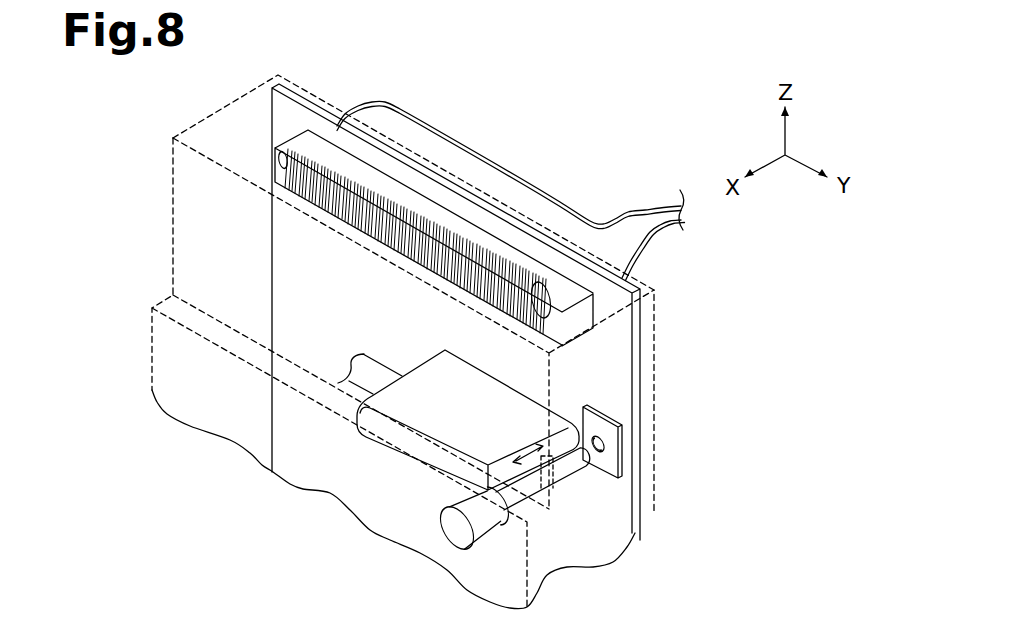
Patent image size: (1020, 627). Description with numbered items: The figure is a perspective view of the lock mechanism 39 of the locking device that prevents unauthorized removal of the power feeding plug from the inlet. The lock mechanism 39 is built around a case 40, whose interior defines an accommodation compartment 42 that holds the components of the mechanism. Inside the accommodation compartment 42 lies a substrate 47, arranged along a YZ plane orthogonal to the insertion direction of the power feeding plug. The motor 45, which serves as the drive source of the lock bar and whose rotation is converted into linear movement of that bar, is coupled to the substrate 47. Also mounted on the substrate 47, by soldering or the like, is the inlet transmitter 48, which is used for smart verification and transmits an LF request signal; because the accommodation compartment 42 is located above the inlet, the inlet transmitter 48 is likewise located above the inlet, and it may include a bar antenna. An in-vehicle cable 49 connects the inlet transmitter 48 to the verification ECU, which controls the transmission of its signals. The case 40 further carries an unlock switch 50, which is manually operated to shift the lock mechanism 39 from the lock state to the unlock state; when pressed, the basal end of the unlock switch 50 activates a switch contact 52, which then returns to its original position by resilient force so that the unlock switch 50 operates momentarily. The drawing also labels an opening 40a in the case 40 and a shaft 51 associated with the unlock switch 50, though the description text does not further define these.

The lock mechanism 39 is at (120, 110).
The case 40 is at (208, 118).
The opening in support panel 40a is at (553, 515).
The accommodation compartment 42 is at (172, 256).
The motor 45 is at (405, 456).
The substrate 47 is at (588, 273).
The inlet transmitter 48 is at (378, 178).
The in-vehicle cable 49 is at (681, 231).
The unlock switch 50 is at (447, 519).
The shaft 51 is at (487, 540).
The switch contact 52 is at (597, 471).